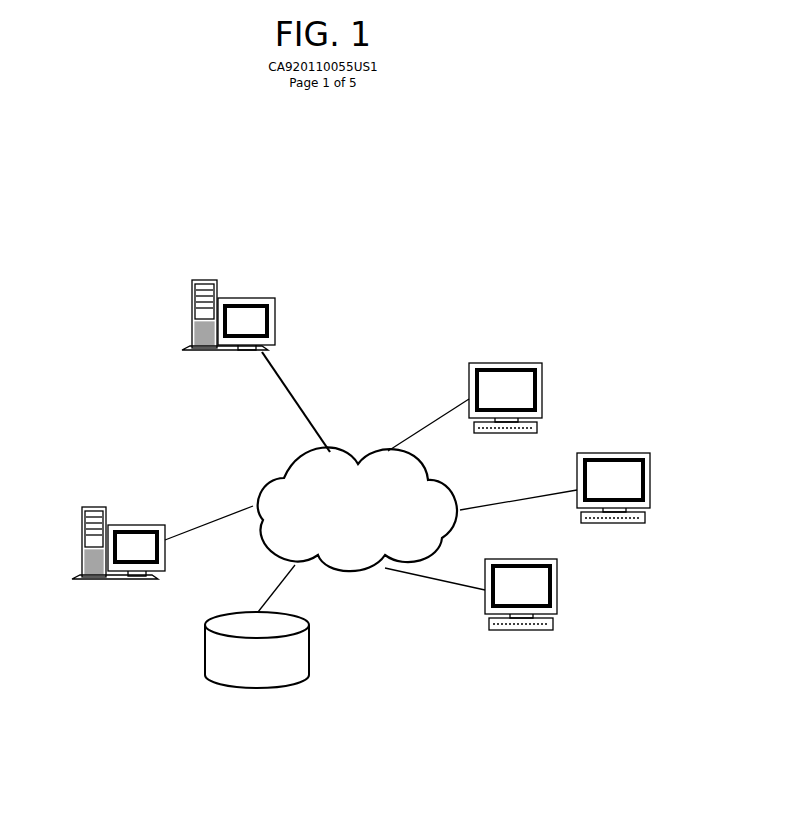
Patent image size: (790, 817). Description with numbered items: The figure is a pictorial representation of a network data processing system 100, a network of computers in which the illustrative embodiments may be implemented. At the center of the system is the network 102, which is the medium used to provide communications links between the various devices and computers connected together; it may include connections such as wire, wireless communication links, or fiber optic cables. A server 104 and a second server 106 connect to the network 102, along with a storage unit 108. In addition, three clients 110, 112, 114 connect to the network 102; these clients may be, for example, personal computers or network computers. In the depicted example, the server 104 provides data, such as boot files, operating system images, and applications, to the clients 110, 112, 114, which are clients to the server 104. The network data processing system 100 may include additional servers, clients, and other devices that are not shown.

The network data processing system 100 is at (112, 400).
The network 102 is at (345, 526).
The server 104 is at (246, 298).
The server 106 is at (137, 525).
The storage unit 108 is at (258, 688).
The client 110 is at (505, 363).
The client 112 is at (613, 453).
The client 114 is at (557, 590).